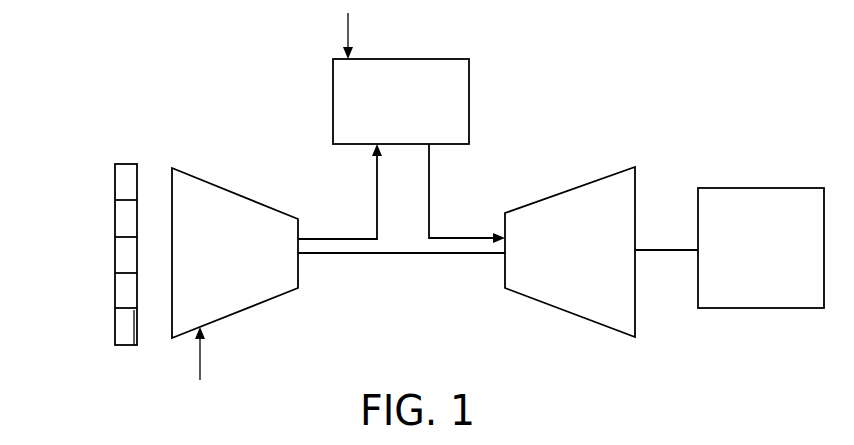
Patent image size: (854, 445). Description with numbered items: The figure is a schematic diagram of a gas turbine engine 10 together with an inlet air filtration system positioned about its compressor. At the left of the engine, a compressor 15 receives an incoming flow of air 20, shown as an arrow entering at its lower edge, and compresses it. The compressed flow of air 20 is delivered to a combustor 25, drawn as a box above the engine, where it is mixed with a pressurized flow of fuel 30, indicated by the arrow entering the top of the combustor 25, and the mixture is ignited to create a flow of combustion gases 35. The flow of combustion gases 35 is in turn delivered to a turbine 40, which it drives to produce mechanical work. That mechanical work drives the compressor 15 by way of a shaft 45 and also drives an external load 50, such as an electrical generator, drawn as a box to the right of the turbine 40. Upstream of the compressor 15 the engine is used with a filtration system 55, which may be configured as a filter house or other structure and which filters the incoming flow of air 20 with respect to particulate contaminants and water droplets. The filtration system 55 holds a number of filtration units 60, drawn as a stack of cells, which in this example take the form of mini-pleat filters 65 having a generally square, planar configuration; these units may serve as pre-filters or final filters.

The gas turbine engine 10 is at (197, 87).
The compressor 15 is at (235, 253).
The flow of air 20 is at (202, 358).
The combustor 25 is at (401, 101).
The flow of fuel 30 is at (351, 32).
The flow of combustion gases 35 is at (457, 237).
The turbine 40 is at (570, 252).
The shaft 45 is at (647, 250).
The external load 50 is at (761, 248).
The filtration system 55 is at (110, 174).
The filtration units 60 is at (115, 329).
The mini-pleat filters 65 is at (137, 330).